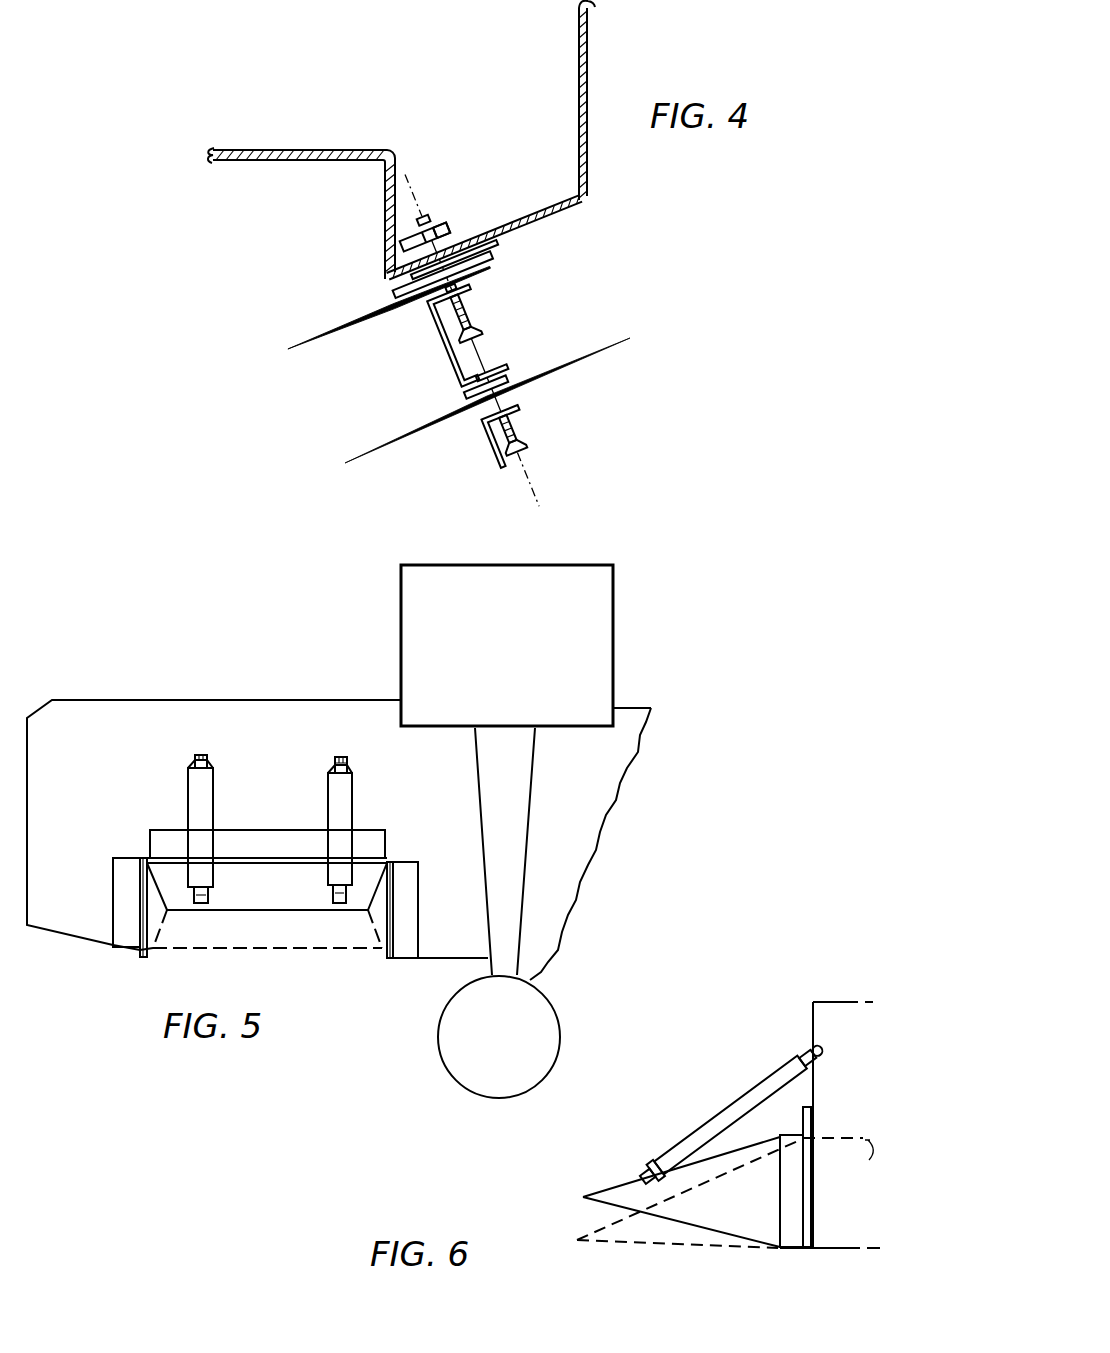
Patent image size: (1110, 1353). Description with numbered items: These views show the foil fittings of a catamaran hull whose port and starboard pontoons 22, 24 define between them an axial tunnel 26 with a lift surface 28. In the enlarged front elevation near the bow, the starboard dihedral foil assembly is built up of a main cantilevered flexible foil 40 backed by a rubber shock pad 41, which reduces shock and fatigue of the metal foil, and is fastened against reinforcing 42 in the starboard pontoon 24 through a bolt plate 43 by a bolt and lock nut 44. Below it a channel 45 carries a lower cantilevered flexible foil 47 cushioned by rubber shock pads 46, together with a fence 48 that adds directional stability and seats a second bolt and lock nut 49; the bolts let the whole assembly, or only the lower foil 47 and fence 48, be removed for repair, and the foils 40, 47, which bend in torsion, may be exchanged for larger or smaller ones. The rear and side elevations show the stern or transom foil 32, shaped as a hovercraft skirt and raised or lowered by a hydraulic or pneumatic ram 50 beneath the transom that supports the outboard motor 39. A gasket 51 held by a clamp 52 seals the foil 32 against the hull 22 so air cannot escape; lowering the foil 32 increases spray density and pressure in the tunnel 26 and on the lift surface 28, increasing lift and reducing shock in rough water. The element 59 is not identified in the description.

In FIG. 5, the port pontoon 22 is at (50, 884).
In FIG. 4, the starboard pontoon 24 is at (380, 188).
In FIG. 4, the axial tunnel 26 is at (408, 234).
In FIG. 5, the axial tunnel 26 is at (252, 946).
In FIG. 4, the lift surface 28 is at (342, 146).
In FIG. 5, the lift surface 28 is at (277, 857).
In FIG. 6, the lift surface 28 is at (838, 1160).
In FIG. 5, the stern or transom foil 32 is at (275, 901).
In FIG. 6, the stern or transom foil 32 is at (698, 1216).
In FIG. 5, the outboard motor 39 is at (481, 646).
In FIG. 4, the main cantilevered flexible foil 40 is at (383, 308).
In FIG. 4, the rubber shock pad 41 is at (484, 253).
In FIG. 4, the reinforcing 42 is at (457, 233).
In FIG. 4, the bolt plate 43 is at (437, 225).
In FIG. 4, the bolt and lock nut 44 is at (422, 216).
In FIG. 4, the channel 45 is at (432, 355).
In FIG. 4, the rubber shock pad 46 is at (466, 398).
In FIG. 4, the lower cantilevered flexible foil 47 is at (423, 427).
In FIG. 4, the fence 48 is at (482, 427).
In FIG. 4, the bolt and lock nut 49 is at (520, 431).
In FIG. 5, the hydraulic or pneumatic ram 50 is at (200, 813).
In FIG. 6, the hydraulic or pneumatic ram 50 is at (735, 1112).
In FIG. 5, the gasket 51 is at (218, 866).
In FIG. 6, the gasket 51 is at (808, 1124).
In FIG. 5, the clamp 52 is at (168, 843).
In FIG. 6, the clamp 52 is at (793, 1179).
In FIG. 5, the edge 59 is at (140, 918).